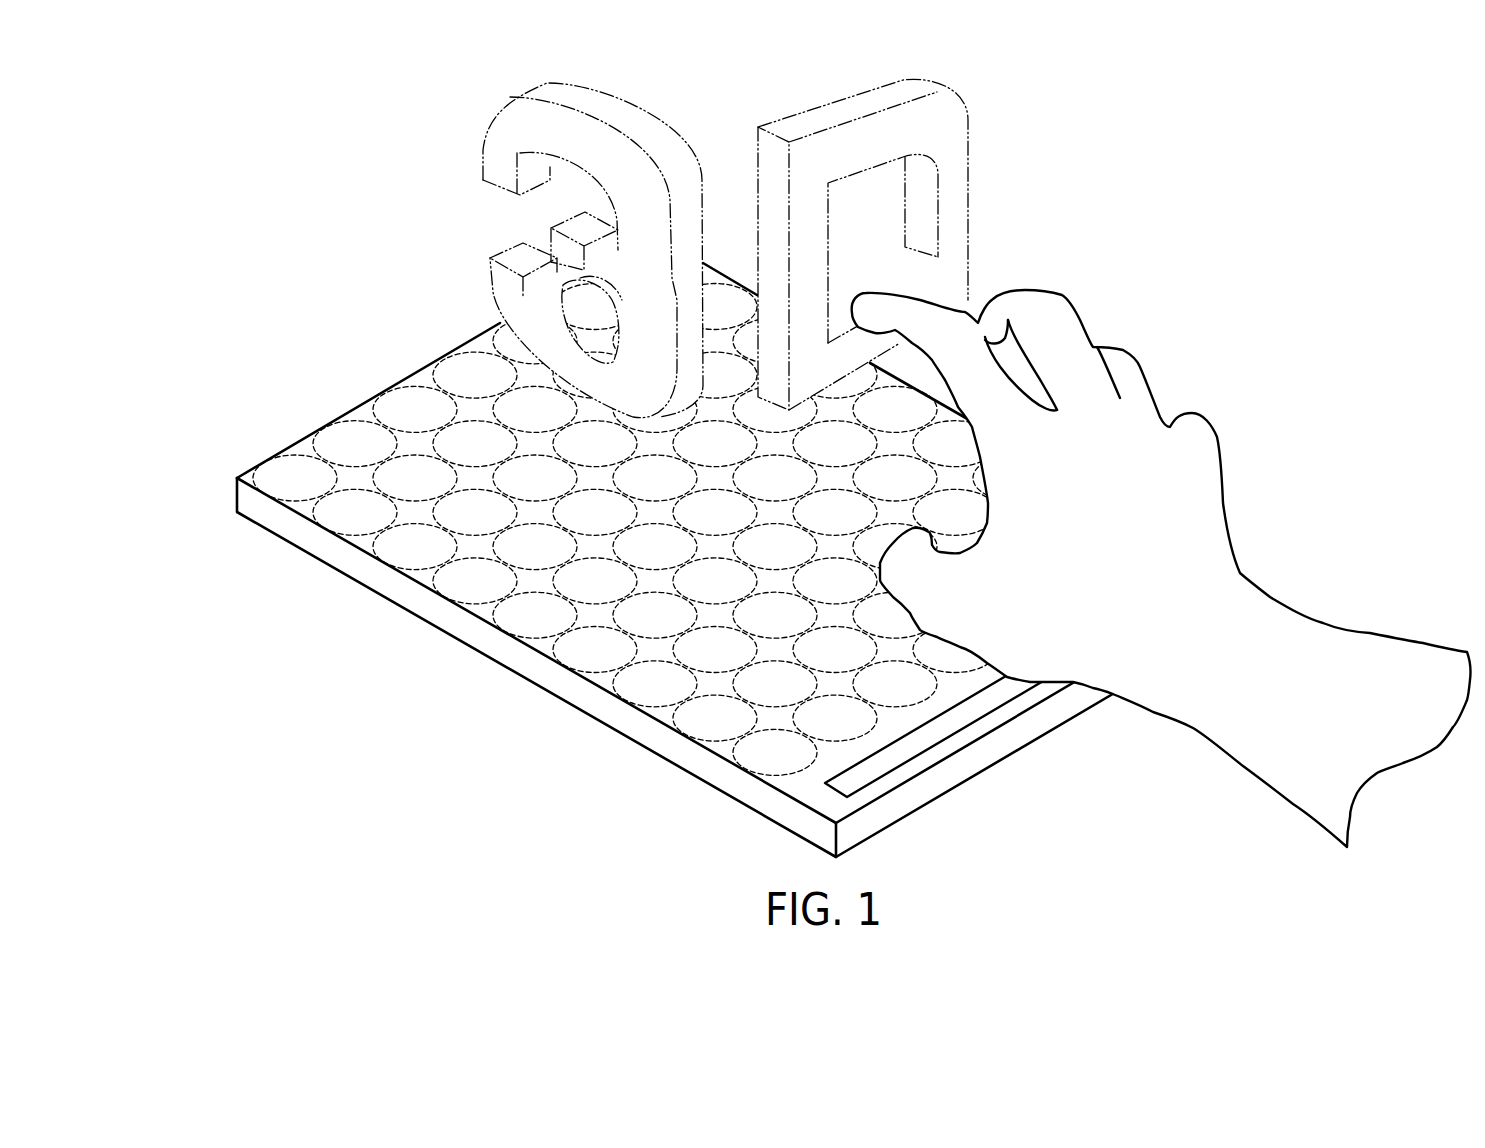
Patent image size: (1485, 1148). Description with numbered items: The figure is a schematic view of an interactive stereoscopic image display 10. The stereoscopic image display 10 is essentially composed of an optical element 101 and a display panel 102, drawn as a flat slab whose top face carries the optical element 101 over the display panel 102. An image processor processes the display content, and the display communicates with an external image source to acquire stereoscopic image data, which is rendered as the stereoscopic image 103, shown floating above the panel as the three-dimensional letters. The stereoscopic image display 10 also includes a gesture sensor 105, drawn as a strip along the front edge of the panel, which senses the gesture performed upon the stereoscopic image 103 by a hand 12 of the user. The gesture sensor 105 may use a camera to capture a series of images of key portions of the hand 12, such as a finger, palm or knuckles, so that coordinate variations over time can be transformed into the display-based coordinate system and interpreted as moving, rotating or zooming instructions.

The stereoscopic image display 10 is at (624, 553).
The optical element 101 is at (283, 470).
The display panel 102 is at (237, 495).
The stereoscopic image 103 is at (490, 143).
The gesture sensor 105 is at (983, 710).
The hand 12 is at (1208, 509).